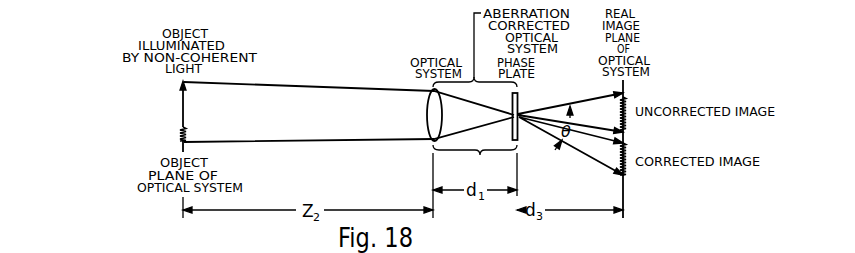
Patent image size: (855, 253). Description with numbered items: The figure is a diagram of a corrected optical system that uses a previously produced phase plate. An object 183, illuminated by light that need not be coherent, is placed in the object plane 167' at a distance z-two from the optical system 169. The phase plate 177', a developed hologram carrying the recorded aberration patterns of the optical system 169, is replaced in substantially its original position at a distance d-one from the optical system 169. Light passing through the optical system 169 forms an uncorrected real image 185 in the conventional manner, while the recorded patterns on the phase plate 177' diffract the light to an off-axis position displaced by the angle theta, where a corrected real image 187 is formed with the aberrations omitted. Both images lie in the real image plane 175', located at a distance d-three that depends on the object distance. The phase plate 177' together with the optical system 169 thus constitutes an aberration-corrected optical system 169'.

The object 183 is at (183, 108).
The object plane 167' is at (161, 140).
The optical system 169 is at (407, 115).
The phase plate 177' is at (539, 113).
The aberration-corrected optical system 169' is at (468, 131).
The uncorrected real image 185 is at (626, 120).
The corrected real image 187 is at (626, 160).
The real image plane 175' is at (644, 149).